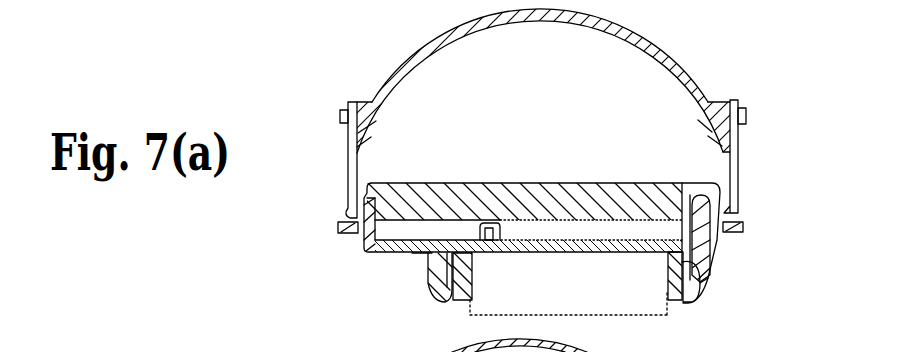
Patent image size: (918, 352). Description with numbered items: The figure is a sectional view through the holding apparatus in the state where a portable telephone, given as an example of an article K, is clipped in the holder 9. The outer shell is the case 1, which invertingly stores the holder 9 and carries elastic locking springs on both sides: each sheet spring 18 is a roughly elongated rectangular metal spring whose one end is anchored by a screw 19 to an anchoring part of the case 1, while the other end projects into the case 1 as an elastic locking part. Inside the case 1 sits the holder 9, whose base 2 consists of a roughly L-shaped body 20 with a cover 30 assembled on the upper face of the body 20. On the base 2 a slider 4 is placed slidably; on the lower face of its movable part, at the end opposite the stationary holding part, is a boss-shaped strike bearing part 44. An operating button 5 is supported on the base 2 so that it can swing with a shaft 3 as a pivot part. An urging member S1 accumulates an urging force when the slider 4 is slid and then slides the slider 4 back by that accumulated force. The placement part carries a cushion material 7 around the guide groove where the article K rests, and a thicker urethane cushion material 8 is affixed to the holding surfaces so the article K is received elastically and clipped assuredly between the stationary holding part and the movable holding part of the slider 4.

The case 1 is at (670, 45).
The sheet spring 18 is at (348, 163).
The screw 19 is at (340, 116).
The cover 30 is at (633, 183).
The strike bearing part 44 is at (480, 230).
The urging member S1 is at (556, 224).
The shaft 3 is at (712, 229).
The slider 4 is at (441, 294).
The cushion material 7 is at (423, 254).
The cushion material 8 is at (465, 303).
The operating button 5 is at (710, 268).
The body 20 is at (702, 295).
The article K is at (632, 317).
The holder 9 is at (363, 302).
The base 2 is at (532, 341).